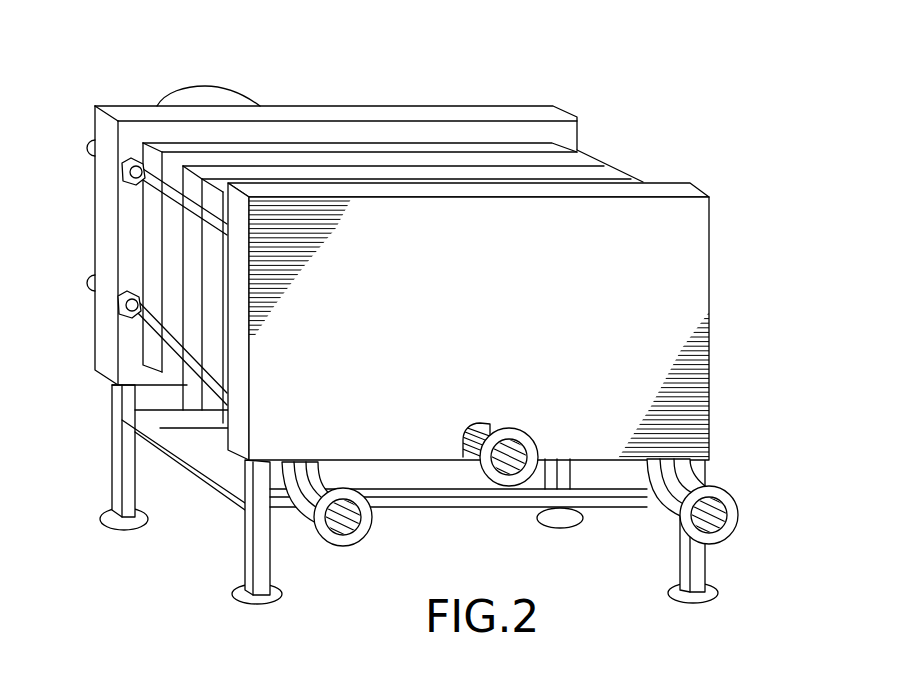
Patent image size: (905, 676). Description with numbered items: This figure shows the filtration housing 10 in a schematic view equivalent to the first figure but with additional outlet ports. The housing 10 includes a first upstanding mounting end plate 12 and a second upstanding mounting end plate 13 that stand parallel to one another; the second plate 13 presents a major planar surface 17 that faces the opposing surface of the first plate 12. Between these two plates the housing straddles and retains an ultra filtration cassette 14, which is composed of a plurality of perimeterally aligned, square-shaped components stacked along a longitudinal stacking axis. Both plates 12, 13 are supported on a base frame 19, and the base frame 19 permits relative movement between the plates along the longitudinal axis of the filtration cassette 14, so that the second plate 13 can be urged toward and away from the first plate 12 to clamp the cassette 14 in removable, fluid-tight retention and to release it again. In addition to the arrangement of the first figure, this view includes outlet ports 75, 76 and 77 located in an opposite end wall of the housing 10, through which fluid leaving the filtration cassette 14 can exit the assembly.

The filtration housing 10 is at (472, 54).
The first upstanding parallel mounting end plate 12 is at (709, 190).
The second upstanding parallel mounting end plate 13 is at (577, 117).
The ultra filtration cassette 14 is at (630, 150).
The major planar surface 17 is at (130, 348).
The base frame 19 is at (237, 547).
The outlet port 75 is at (740, 511).
The outlet port 76 is at (373, 530).
The outlet port 77 is at (480, 488).